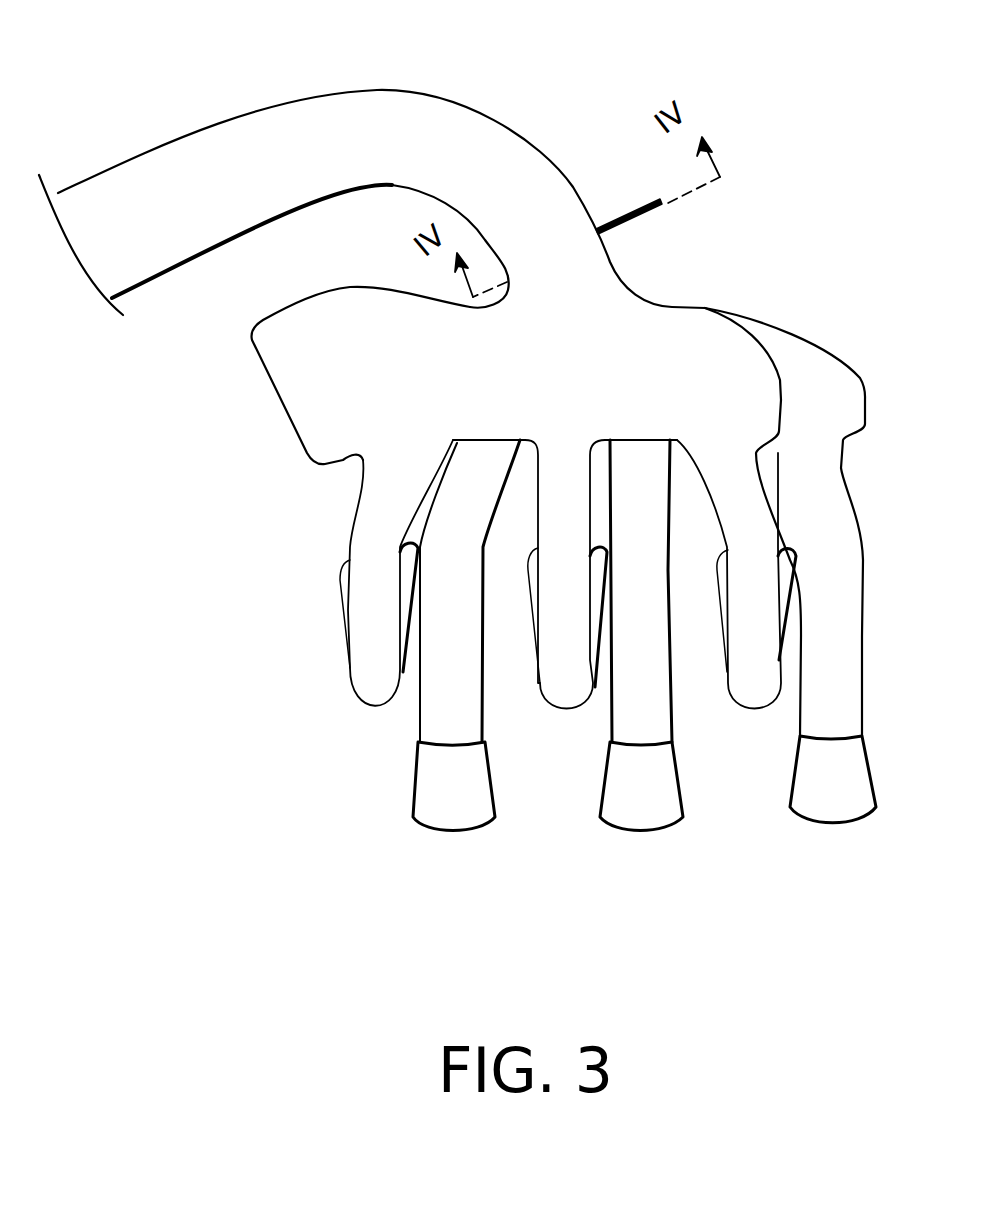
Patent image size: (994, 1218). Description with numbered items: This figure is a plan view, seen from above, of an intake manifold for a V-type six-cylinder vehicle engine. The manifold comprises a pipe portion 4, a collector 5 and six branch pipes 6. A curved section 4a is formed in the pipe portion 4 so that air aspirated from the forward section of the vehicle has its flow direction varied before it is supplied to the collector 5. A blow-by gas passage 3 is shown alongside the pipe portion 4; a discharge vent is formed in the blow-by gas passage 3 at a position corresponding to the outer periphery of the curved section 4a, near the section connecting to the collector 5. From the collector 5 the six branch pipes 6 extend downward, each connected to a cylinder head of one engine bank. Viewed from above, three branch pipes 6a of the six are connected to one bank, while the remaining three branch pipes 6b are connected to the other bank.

The blow-by gas passage 3 is at (620, 217).
The pipe portion 4 is at (263, 222).
The curved section 4a is at (492, 115).
The collector 5 is at (282, 413).
The branch pipes 6 is at (549, 627).
The branch pipes (first bank) 6a is at (367, 632).
The branch pipes (second bank) 6b is at (437, 707).